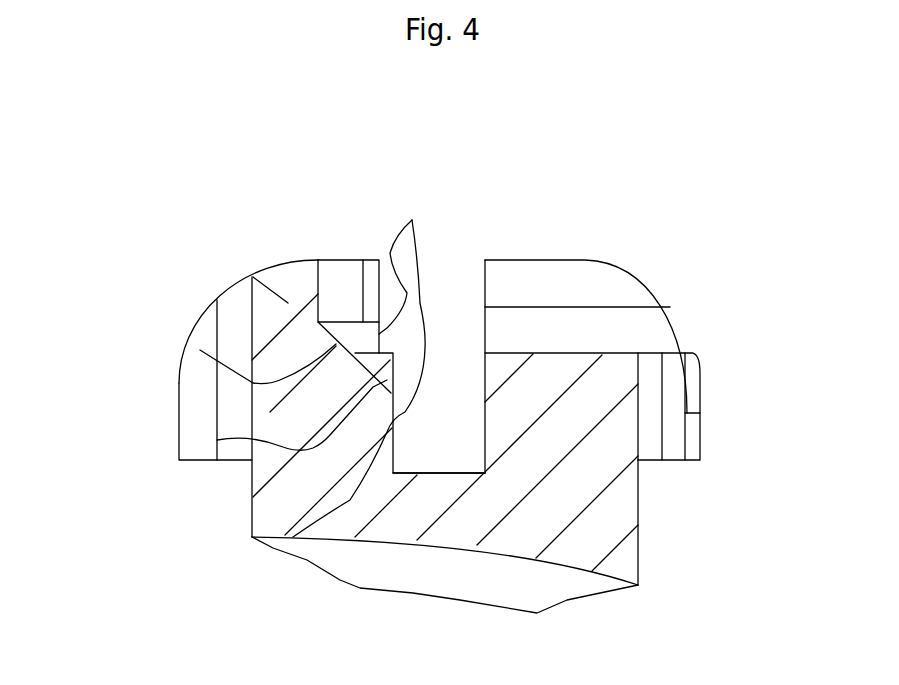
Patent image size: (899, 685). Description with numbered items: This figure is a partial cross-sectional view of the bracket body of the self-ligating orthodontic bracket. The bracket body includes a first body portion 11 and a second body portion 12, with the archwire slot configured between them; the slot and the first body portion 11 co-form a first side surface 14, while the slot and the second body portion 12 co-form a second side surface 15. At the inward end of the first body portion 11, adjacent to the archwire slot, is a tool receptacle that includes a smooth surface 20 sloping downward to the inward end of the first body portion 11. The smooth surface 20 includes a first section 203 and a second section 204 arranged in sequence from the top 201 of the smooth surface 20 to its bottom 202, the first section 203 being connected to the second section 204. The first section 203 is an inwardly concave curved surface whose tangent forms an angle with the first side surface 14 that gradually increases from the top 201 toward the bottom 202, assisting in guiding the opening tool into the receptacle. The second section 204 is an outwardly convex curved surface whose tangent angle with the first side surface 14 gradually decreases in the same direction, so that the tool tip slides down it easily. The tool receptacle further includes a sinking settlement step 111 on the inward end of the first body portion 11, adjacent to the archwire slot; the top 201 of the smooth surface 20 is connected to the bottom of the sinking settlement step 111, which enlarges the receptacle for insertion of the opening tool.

The first body portion 11 is at (316, 321).
The second body portion 12 is at (602, 290).
The first side surface 14 is at (363, 360).
The second side surface 15 is at (485, 290).
The smooth surface 20 is at (378, 340).
The sinking settlement step 111 is at (345, 283).
The top of the smooth surface 201 is at (251, 277).
The bottom of the smooth surface 202 is at (293, 537).
The first section 203 is at (200, 350).
The second section 204 is at (217, 440).